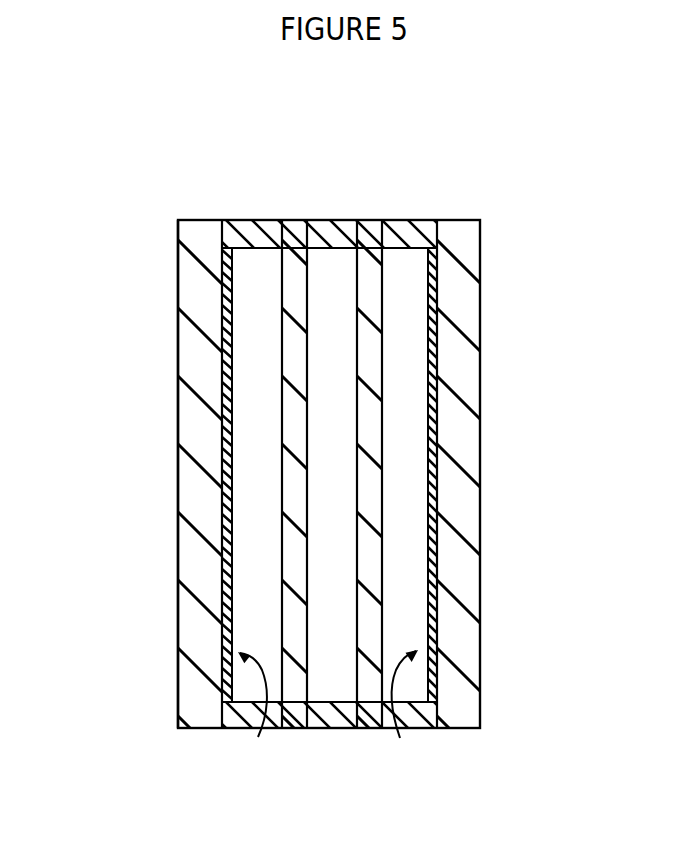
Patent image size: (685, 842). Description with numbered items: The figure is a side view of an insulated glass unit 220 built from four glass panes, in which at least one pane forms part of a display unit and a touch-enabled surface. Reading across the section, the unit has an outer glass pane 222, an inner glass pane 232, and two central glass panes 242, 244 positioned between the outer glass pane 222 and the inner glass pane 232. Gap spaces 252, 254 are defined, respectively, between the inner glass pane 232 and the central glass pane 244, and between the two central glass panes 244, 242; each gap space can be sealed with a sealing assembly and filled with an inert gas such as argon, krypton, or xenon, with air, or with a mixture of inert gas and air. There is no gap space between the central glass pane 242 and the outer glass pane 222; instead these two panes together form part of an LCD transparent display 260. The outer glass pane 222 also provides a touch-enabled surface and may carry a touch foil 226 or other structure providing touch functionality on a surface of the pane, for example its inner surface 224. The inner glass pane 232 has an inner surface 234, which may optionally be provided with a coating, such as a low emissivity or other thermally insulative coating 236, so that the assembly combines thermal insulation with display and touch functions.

The insulated glass unit 220 is at (353, 441).
The outer glass pane 222 is at (462, 238).
The inner surface 224 is at (395, 720).
The touch foil 226 is at (437, 450).
The inner glass pane 232 is at (197, 237).
The inner surface 234 is at (238, 721).
The heat transfer layer 236 is at (226, 455).
The central glass pane 242 is at (372, 237).
The central glass pane 244 is at (293, 237).
The gap space 252 is at (333, 282).
The gap space 254 is at (240, 342).
The LCD transparent display 260 is at (408, 532).